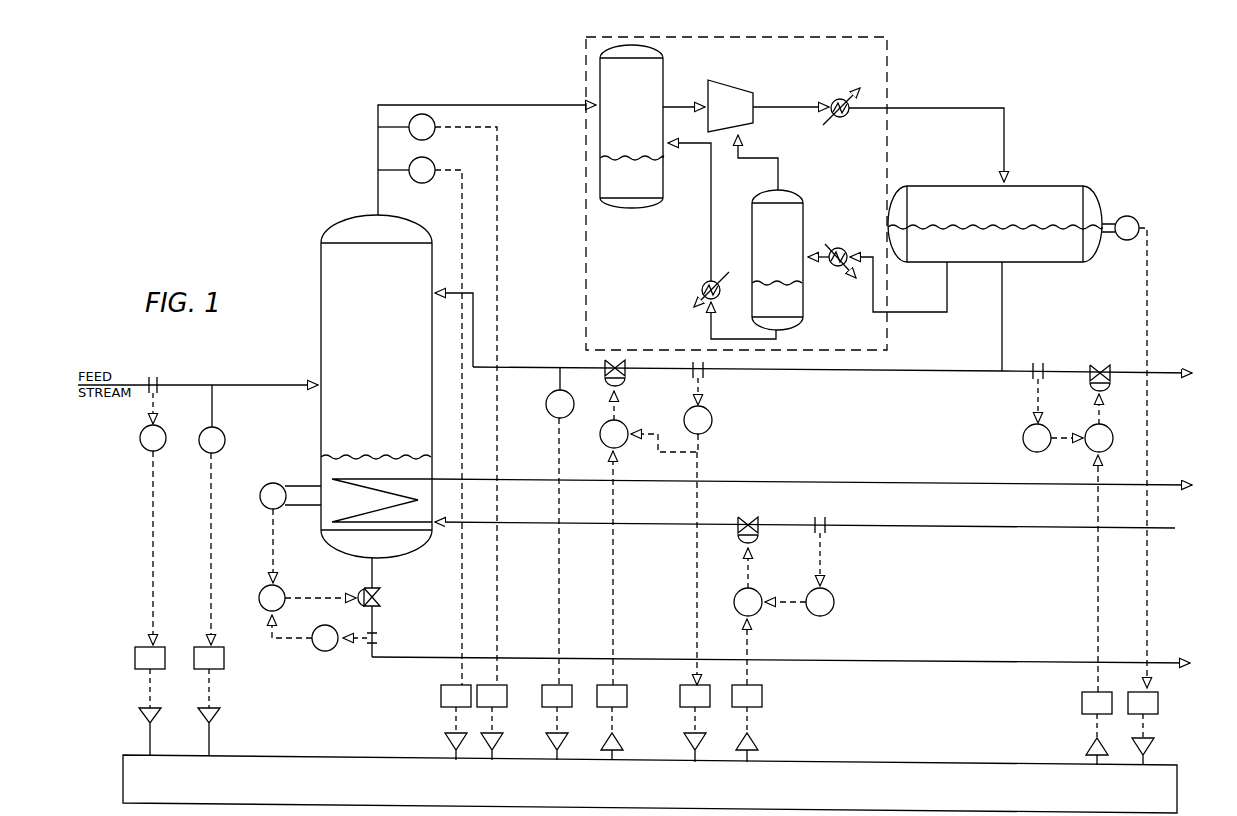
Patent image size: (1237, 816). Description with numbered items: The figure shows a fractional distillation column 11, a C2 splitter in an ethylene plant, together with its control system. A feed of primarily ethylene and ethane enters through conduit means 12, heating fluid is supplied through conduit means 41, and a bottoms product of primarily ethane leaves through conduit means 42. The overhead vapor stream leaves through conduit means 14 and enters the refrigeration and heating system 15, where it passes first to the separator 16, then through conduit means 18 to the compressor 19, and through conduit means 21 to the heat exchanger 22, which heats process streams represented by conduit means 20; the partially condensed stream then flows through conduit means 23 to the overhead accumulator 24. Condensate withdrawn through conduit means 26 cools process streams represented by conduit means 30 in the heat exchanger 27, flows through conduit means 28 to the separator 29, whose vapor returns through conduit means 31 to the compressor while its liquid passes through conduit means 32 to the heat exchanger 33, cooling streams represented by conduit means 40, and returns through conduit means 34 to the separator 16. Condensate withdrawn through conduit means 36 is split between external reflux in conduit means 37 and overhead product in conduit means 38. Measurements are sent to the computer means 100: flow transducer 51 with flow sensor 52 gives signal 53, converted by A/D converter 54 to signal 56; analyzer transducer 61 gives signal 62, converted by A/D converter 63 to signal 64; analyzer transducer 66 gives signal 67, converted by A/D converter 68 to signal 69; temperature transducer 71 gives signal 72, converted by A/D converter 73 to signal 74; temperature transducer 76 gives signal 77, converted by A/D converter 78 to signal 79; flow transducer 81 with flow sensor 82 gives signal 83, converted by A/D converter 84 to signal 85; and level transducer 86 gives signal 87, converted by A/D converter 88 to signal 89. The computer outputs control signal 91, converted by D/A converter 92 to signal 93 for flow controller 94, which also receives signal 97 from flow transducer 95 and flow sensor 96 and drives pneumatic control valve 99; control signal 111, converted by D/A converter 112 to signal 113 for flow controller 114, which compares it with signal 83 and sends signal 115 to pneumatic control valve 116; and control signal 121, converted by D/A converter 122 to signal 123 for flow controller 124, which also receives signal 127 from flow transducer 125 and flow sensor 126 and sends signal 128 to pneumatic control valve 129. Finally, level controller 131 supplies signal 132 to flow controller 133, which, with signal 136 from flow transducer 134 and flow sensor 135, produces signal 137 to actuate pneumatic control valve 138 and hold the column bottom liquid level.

The fractional distillation column 11 is at (321, 320).
The conduit means 12 is at (298, 375).
The conduit means 14 is at (376, 192).
The refrigeration and heating system 15 is at (585, 77).
The separator 16 is at (663, 196).
The conduit means 18 is at (673, 107).
The compressor 19 is at (753, 97).
The conduit means 20 is at (853, 86).
The conduit means 21 is at (783, 107).
The heat exchanger 22 is at (845, 117).
The conduit means 23 is at (967, 107).
The overhead accumulator 24 is at (1040, 262).
The conduit means 26 is at (920, 312).
The heat exchanger 27 is at (843, 248).
The conduit means 28 is at (822, 265).
The separator 29 is at (803, 308).
The conduit means 30 is at (826, 246).
The conduit means 31 is at (778, 170).
The conduit means 32 is at (711, 339).
The heat exchanger 33 is at (702, 294).
The conduit means 34 is at (711, 242).
The conduit means 36 is at (1002, 318).
The conduit means 37 is at (850, 372).
The conduit means 38 is at (1155, 373).
The conduit means 40 is at (698, 310).
The conduit means 41 is at (958, 526).
The conduit means 42 is at (400, 657).
The flow transducer 51 is at (163, 428).
The flow sensor 52 is at (153, 377).
The output signal 53 is at (151, 538).
The analog-to-digital converter 54 is at (133, 656).
The signal 56 is at (152, 690).
The analyzer transducer 61 is at (222, 430).
The output signal 62 is at (209, 538).
The A/D converter 63 is at (216, 647).
The signal 64 is at (211, 690).
The analyzer transducer 66 is at (418, 184).
The output signal 67 is at (462, 602).
The A/D converter 68 is at (441, 696).
The signal 69 is at (458, 718).
The temperature transducer 71 is at (418, 112).
The output signal 72 is at (497, 158).
The A/D converter 73 is at (507, 693).
The signal 74 is at (494, 718).
The temperature transducer 76 is at (546, 410).
The output signal 77 is at (559, 600).
The A/D converter 78 is at (546, 680).
The signal 79 is at (559, 718).
The flow transducer 81 is at (711, 426).
The flow sensor 82 is at (703, 378).
The output signal 83 is at (697, 578).
The A/D converter 84 is at (684, 680).
The signal 85 is at (697, 718).
The level transducer 86 is at (1128, 215).
The output signal 87 is at (1147, 258).
The A/D converter 88 is at (1132, 686).
The signal 89 is at (1134, 735).
The control signal 91 is at (1088, 735).
The digital-to-analog converter 92 is at (1085, 686).
The signal 93 is at (1098, 600).
The flow controller 94 is at (1104, 424).
The flow transducer 95 is at (1023, 436).
The flow sensor 96 is at (1038, 362).
The output signal 97 is at (1062, 440).
The pneumatic control valve 99 is at (1113, 348).
The computer means 100 is at (897, 764).
The control signal 111 is at (614, 718).
The D/A converter 112 is at (602, 680).
The signal 113 is at (613, 580).
The flow controller 114 is at (626, 446).
The output signal 115 is at (618, 405).
The pneumatic control valve 116 is at (626, 372).
The control signal 121 is at (749, 718).
The digital-to-analog converter 122 is at (762, 700).
The signal 123 is at (748, 645).
The flow controller 124 is at (734, 598).
The flow transducer 125 is at (832, 594).
The flow sensor 126 is at (825, 517).
The output signal 127 is at (780, 604).
The signal 128 is at (748, 570).
The pneumatic control valve 129 is at (755, 515).
The level controller 131 is at (278, 483).
The output signal 132 is at (273, 546).
The flow controller 133 is at (259, 590).
The flow transducer 134 is at (325, 652).
The flow sensor 135 is at (378, 636).
The output signal 136 is at (278, 643).
The output signal 137 is at (314, 598).
The pneumatic control valve 138 is at (382, 590).